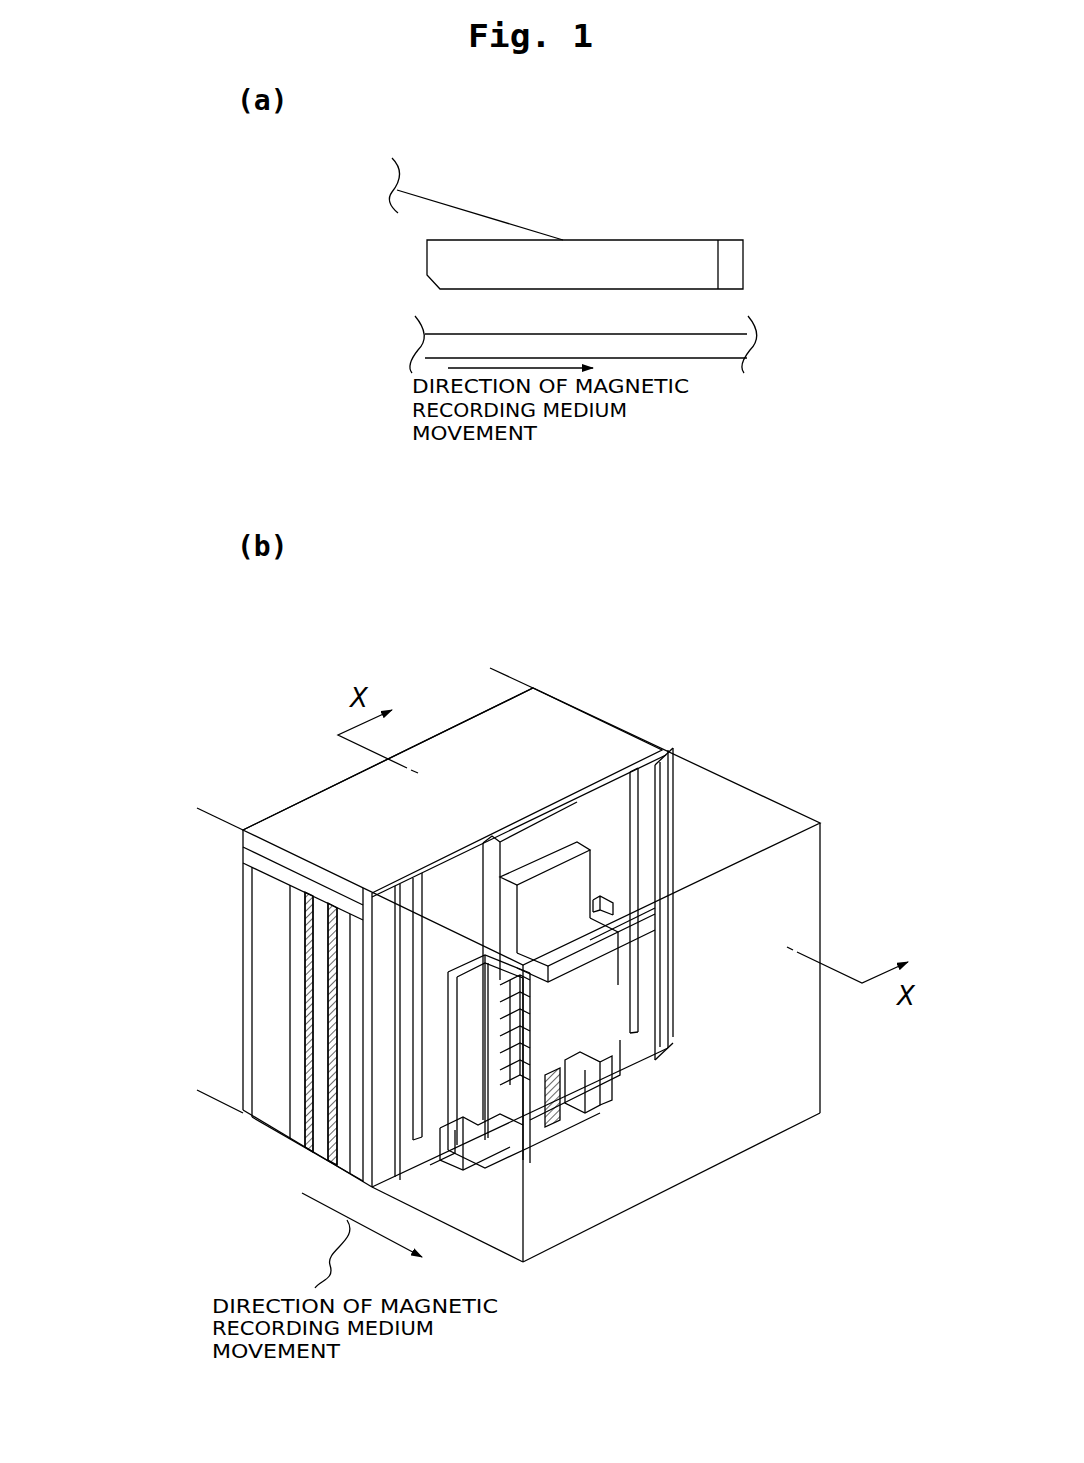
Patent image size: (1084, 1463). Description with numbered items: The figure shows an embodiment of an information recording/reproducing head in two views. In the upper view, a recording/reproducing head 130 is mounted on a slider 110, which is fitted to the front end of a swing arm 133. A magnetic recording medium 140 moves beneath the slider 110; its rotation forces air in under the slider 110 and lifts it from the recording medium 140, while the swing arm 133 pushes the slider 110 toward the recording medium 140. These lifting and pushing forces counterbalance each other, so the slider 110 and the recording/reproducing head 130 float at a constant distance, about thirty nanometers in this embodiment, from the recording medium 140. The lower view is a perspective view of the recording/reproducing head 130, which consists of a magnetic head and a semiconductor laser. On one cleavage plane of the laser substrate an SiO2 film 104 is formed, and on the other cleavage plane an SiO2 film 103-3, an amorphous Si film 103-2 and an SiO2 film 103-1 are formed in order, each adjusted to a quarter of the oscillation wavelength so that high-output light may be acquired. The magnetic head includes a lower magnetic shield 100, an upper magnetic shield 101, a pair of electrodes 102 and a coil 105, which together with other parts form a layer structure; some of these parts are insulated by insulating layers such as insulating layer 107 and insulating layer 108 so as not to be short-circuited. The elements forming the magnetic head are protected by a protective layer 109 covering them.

The lower magnetic shield 100 is at (580, 823).
The upper magnetic shield 101 is at (593, 870).
The pair of electrodes 102 is at (413, 877).
The SiO2 film 103-1 is at (290, 820).
The amorphous Si film 103-2 is at (243, 850).
The SiO2 film 103-3 is at (240, 866).
The SiO2 film 104 is at (287, 1135).
The coil 105 is at (530, 1045).
The insulating layer 107 is at (467, 928).
The insulating layer 108 is at (470, 1160).
The protective layer 109 is at (768, 812).
The slider 110 is at (437, 267).
The recording/reproducing head 130 is at (728, 250).
The swing arm 133 is at (497, 222).
The magnetic recording medium 140 is at (735, 357).